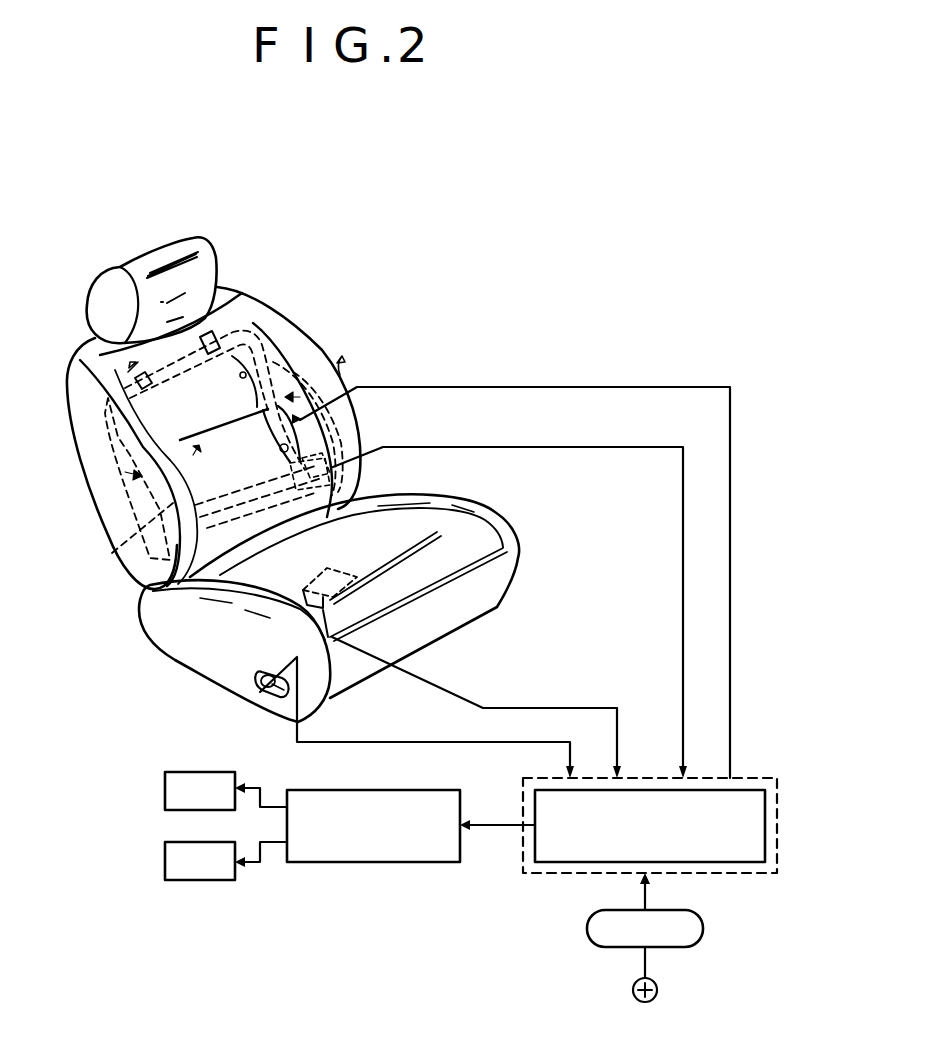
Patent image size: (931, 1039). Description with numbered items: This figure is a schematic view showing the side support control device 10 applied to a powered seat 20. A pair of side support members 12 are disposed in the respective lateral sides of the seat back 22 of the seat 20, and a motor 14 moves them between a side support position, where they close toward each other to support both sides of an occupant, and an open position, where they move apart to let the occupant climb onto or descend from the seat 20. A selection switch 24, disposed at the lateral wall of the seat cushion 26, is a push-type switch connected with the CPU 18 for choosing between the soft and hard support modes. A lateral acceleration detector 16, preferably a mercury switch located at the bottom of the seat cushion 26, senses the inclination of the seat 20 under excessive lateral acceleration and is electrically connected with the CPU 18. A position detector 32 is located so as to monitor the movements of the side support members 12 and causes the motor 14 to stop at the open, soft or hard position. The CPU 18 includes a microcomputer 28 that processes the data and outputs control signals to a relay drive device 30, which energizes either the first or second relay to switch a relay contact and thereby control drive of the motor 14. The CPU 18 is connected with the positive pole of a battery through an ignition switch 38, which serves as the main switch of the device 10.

The side support control device 10 is at (765, 546).
The side support member 12 is at (296, 370).
The motor 14 is at (275, 431).
The lateral acceleration detector 16 is at (312, 588).
The CPU 18 is at (760, 874).
The seat 20 is at (398, 335).
The seat back 22 is at (244, 273).
The selection switch 24 is at (262, 691).
The seat cushion 26 is at (176, 652).
The microcomputer 28 is at (545, 859).
The relay drive device 30 is at (388, 863).
The position detector 32 is at (330, 482).
The ignition switch 38 is at (590, 939).